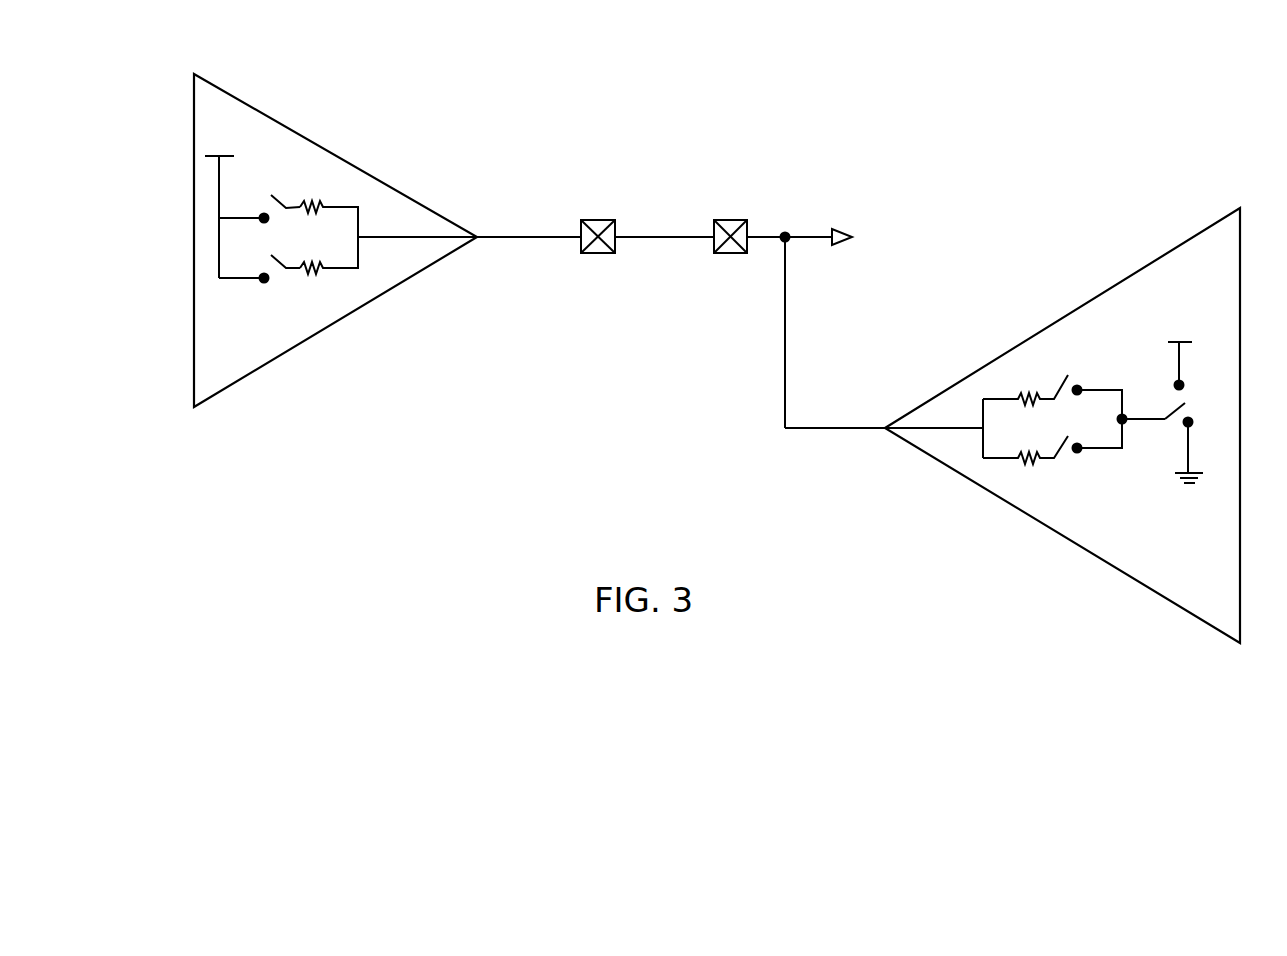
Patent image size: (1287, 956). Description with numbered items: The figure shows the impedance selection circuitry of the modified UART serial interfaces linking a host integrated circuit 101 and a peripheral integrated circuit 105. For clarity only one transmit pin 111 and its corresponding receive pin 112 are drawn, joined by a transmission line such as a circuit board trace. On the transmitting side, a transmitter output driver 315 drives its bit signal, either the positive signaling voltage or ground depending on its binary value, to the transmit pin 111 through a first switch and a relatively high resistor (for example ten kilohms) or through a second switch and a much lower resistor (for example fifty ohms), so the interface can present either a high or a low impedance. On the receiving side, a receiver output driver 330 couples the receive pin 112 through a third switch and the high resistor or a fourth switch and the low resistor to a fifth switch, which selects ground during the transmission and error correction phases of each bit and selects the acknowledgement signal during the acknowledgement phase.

The host integrated circuit 101 is at (389, 71).
The peripheral integrated circuit 105 is at (954, 175).
The transmit pin 111 is at (595, 190).
The receive pin 112 is at (733, 285).
The transmitter output driver 315 is at (307, 138).
The receiver output driver 330 is at (1070, 310).